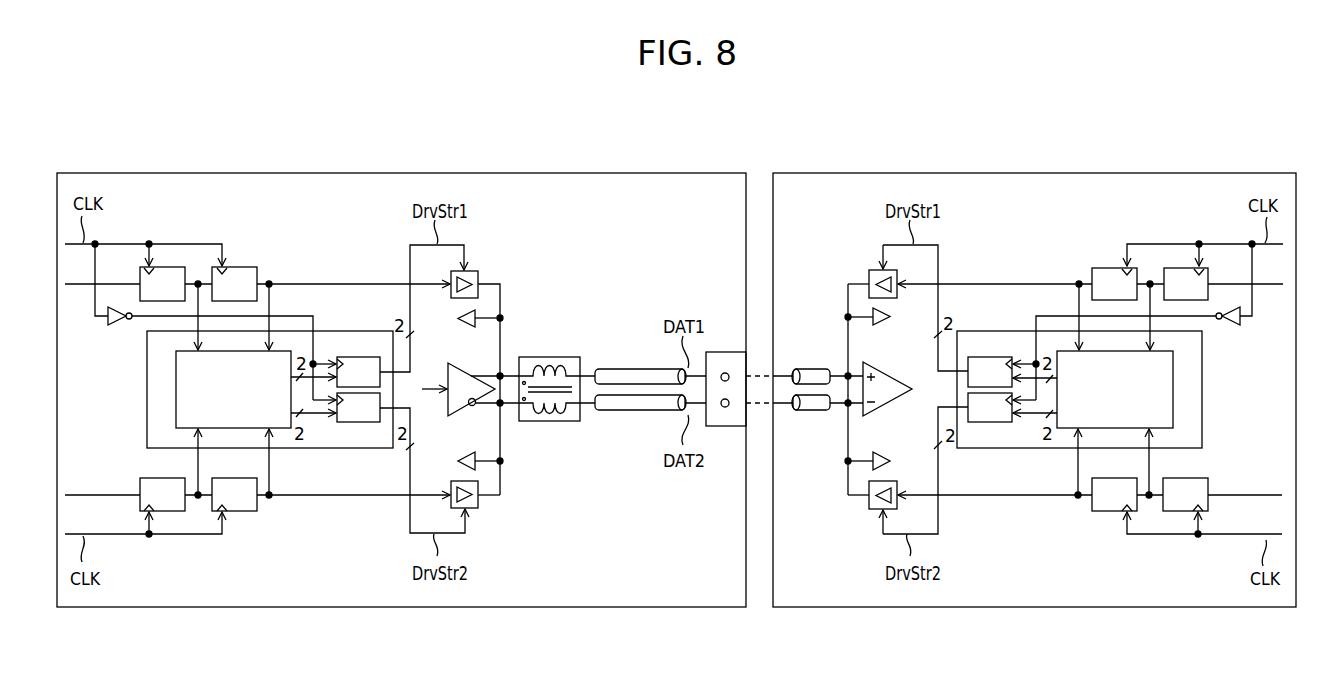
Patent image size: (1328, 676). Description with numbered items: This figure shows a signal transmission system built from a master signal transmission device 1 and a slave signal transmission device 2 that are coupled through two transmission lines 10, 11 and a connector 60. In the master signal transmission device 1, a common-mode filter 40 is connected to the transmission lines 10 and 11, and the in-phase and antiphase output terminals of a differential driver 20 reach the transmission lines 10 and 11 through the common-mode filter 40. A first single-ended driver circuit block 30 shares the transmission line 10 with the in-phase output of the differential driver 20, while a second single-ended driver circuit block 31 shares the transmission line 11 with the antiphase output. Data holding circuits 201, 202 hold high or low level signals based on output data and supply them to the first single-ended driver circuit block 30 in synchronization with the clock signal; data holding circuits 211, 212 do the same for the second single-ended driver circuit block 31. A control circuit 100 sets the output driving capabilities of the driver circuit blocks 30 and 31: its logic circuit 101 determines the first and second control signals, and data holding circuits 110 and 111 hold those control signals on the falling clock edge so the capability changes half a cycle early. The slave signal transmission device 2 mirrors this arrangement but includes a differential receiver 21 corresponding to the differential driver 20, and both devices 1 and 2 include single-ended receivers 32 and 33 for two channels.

The signal transmission device 1 is at (398, 173).
The signal transmission device 2 is at (1031, 173).
The transmission line 10 is at (627, 368).
The transmission line 11 is at (627, 411).
The differential driver 20 is at (470, 366).
The differential receiver 21 is at (885, 408).
The first single-ended driver circuit block 30 is at (479, 276).
The second single-ended driver circuit block 31 is at (479, 503).
The single-ended receiver 32 is at (457, 324).
The single-ended receiver 33 is at (462, 458).
The common-mode filter 40 is at (547, 356).
The connector 60 is at (725, 351).
The control circuit 100 is at (147, 370).
The logic circuit 101 is at (176, 406).
The data holding circuit 110 is at (352, 356).
The data holding circuit 111 is at (358, 423).
The data holding circuit 201 is at (239, 266).
The data holding circuit 202 is at (167, 266).
The data holding circuit 211 is at (240, 512).
The data holding circuit 212 is at (168, 512).